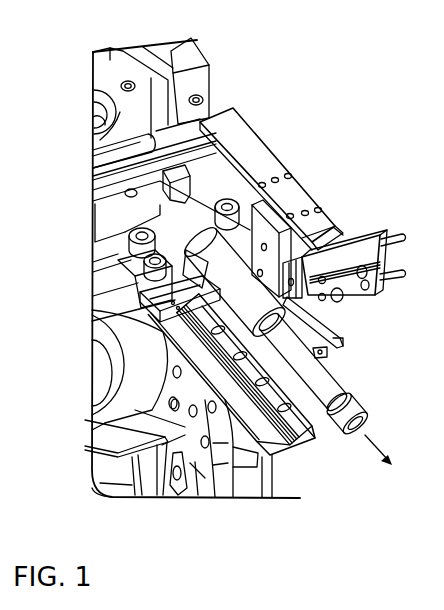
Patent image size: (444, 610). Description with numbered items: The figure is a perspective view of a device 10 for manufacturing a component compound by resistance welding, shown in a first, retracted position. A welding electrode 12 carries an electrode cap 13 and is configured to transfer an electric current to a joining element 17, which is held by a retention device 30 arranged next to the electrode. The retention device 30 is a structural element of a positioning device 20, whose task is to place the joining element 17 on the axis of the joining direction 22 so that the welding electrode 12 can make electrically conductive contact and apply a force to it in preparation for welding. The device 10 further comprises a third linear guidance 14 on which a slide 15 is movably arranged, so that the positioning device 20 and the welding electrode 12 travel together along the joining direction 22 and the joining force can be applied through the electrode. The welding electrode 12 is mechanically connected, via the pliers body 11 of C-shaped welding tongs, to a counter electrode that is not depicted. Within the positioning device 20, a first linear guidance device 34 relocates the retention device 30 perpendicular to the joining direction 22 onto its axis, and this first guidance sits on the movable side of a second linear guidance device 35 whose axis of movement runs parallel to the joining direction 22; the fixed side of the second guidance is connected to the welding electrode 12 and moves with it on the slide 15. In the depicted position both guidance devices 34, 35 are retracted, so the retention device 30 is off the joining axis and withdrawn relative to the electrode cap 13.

The device 10 is at (327, 77).
The pliers body 11 is at (204, 470).
The welding electrode 12 is at (332, 387).
The electrode cap 13 is at (365, 417).
The third linear guidance 14 is at (289, 440).
The slide 15 is at (175, 308).
The joining element 17 is at (318, 353).
The positioning device 20 is at (368, 194).
The joining direction 22 is at (384, 450).
The retention device 30 is at (345, 344).
The first linear guidance device 34 is at (397, 222).
The second linear guidance device 35 is at (334, 192).